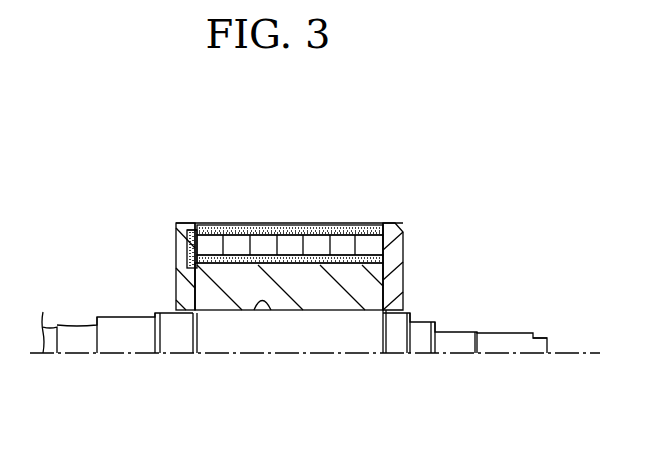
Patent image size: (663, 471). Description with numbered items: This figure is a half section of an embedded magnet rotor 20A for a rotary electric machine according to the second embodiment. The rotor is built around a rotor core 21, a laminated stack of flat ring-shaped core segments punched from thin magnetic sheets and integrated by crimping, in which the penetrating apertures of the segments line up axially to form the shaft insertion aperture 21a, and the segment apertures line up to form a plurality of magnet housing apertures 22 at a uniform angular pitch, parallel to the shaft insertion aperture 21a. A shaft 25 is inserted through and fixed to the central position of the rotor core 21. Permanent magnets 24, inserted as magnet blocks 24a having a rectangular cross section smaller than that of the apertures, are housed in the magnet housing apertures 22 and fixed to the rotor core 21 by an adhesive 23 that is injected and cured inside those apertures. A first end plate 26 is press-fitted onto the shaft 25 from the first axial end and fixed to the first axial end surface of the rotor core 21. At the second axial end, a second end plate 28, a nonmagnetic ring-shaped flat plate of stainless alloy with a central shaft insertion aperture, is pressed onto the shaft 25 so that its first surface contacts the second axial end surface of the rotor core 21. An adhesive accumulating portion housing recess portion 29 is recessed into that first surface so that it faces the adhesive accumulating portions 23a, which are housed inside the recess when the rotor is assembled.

The rotor 20A is at (108, 112).
The rotor core 21 is at (297, 223).
The shaft insertion aperture 21a is at (259, 311).
The magnet housing apertures 22 is at (255, 232).
The adhesive 23 is at (215, 228).
The adhesive accumulating portions 23a is at (183, 250).
The permanent magnets 24 is at (363, 238).
The magnet blocks 24a is at (320, 242).
The shaft 25 is at (507, 340).
The first end plate 26 is at (396, 283).
The second end plate 28 is at (174, 290).
The adhesive accumulating portion housing recess portion 29 is at (175, 232).